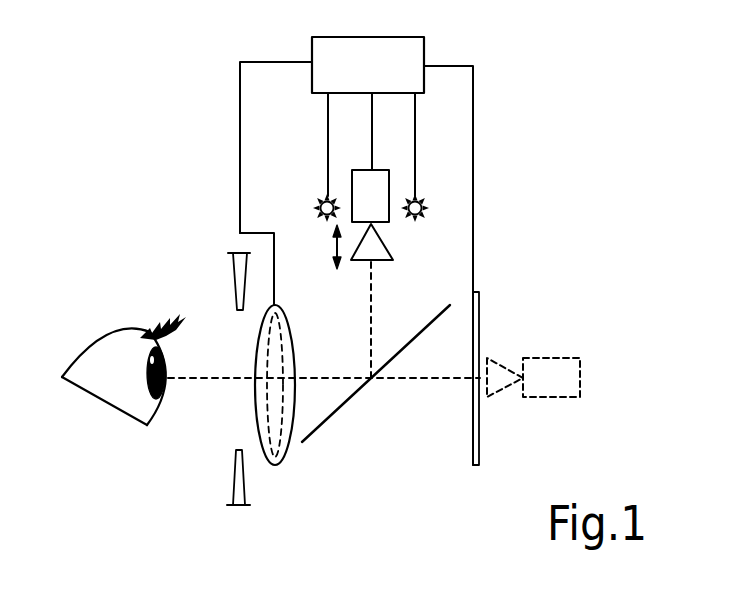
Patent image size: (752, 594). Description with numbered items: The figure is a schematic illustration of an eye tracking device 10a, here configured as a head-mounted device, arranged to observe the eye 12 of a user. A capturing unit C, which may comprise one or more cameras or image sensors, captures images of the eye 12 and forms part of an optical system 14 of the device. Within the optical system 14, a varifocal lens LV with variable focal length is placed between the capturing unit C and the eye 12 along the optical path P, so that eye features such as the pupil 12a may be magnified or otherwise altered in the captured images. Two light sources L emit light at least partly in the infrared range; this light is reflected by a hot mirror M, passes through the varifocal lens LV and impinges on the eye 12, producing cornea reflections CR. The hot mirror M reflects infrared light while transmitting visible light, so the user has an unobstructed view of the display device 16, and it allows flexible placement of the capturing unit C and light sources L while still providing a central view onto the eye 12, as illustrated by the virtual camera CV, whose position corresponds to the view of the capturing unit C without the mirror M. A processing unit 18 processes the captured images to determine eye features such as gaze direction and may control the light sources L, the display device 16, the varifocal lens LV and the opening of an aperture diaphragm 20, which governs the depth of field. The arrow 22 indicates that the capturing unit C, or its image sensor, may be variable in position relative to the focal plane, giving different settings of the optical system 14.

The eye tracking device 10a is at (121, 152).
The eye 12 is at (143, 369).
The pupil 12a is at (166, 373).
The optical system 14 is at (294, 176).
The display device 16 is at (480, 300).
The processing unit 18 is at (385, 89).
The aperture diaphragm 20 is at (236, 272).
The arrow 22 is at (334, 254).
The light source L is at (323, 197).
The capturing unit C is at (379, 234).
The hot mirror M is at (413, 336).
The optical path P is at (370, 300).
The varifocal lens LV is at (268, 310).
The cornea reflection CR is at (146, 364).
The virtual camera CV is at (555, 363).